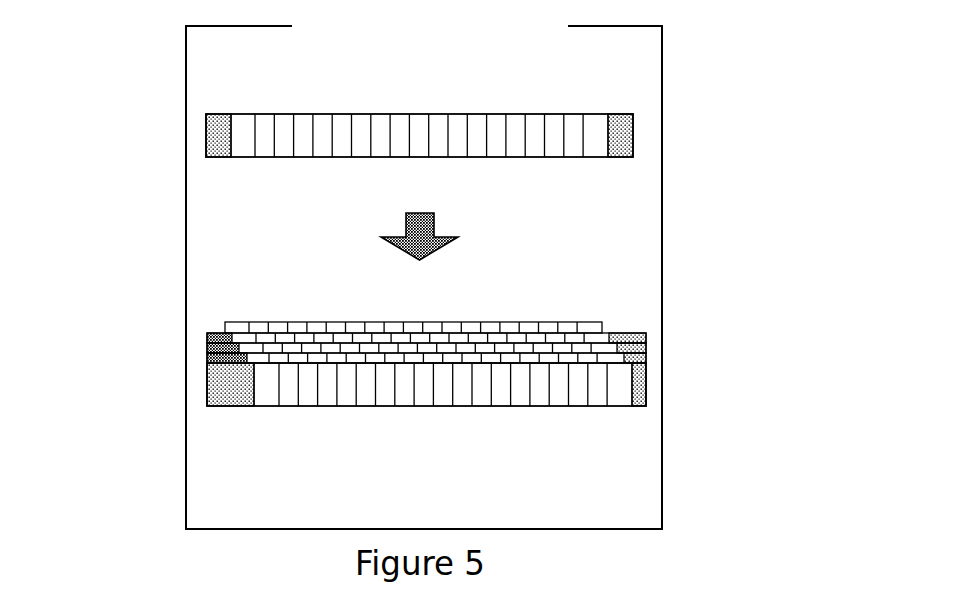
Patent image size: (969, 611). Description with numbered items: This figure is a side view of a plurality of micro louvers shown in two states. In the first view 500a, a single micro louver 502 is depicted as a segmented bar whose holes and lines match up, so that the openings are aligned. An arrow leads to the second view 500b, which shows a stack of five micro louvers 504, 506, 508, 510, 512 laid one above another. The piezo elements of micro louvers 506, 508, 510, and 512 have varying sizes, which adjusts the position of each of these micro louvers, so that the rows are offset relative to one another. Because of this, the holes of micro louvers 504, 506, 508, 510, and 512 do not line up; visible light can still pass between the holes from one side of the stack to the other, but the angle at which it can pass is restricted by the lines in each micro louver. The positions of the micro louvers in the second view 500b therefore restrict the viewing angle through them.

The first view 500a is at (465, 156).
The second view 500b is at (440, 346).
The micro louver 502 is at (206, 134).
The micro louver 504 is at (225, 326).
The micro louver 506 is at (207, 338).
The micro louver 508 is at (207, 349).
The micro louver 510 is at (207, 357).
The micro louver 512 is at (222, 387).